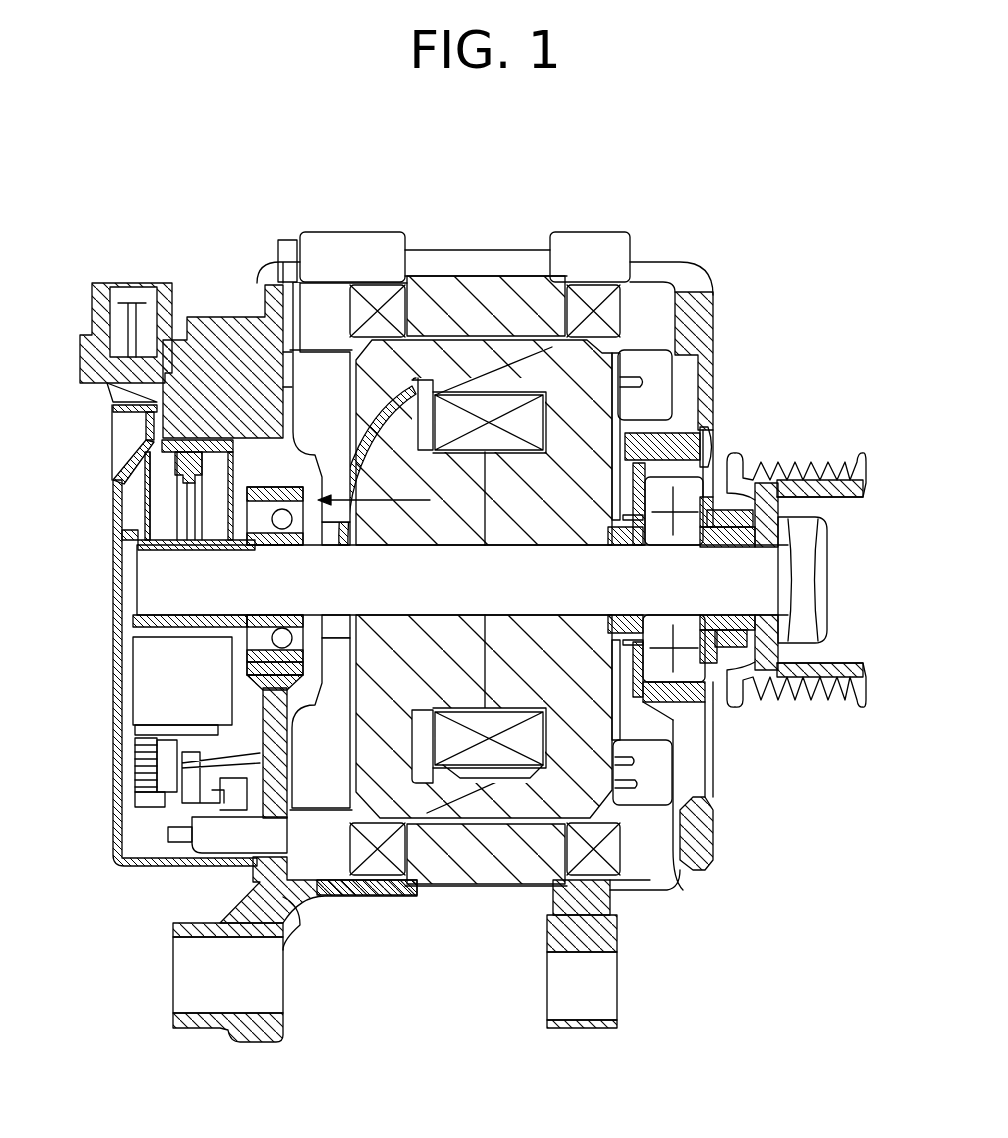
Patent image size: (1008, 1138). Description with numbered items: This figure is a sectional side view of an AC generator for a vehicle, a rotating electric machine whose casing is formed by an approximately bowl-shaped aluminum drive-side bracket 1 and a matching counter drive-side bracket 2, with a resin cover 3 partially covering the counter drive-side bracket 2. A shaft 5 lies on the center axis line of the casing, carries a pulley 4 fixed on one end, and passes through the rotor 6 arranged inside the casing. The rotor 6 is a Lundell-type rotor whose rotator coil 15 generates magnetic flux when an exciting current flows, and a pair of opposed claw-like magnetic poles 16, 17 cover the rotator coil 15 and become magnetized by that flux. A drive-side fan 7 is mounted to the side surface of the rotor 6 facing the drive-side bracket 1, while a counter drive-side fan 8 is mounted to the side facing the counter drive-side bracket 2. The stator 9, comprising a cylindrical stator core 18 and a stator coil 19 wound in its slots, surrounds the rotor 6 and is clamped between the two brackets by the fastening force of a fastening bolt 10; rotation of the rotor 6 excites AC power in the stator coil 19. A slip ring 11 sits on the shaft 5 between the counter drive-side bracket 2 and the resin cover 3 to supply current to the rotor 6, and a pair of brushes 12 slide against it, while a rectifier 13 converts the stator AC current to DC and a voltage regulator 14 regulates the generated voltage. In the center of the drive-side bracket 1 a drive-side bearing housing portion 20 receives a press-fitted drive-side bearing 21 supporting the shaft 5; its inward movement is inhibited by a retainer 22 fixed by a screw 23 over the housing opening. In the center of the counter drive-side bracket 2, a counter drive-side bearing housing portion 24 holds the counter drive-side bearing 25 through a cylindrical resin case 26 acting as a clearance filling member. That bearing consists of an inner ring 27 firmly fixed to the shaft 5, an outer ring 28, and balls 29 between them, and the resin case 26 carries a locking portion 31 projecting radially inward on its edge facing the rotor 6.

The drive-side bracket 1 is at (700, 315).
The counter drive-side bracket 2 is at (262, 702).
The resin cover 3 is at (115, 553).
The pulley 4 is at (840, 460).
The shaft 5 is at (577, 595).
The rotor 6 is at (525, 795).
The drive-side fan 7 is at (660, 365).
The counter drive-side fan 8 is at (333, 785).
The stator 9 is at (533, 290).
The fastening bolt 10 is at (493, 250).
The slip ring 11 is at (148, 557).
The pair of brushes 12 is at (165, 475).
The rectifier 13 is at (218, 838).
The voltage regulator 14 is at (242, 350).
The rotator coil 15 is at (485, 760).
The claw-like magnetic pole 16 is at (465, 365).
The claw-like magnetic pole 17 is at (585, 420).
The stator core 18 is at (565, 300).
The stator coil 19 is at (618, 315).
The drive-side bearing housing portion 20 is at (710, 697).
The drive-side bearing 21 is at (710, 660).
The retainer 22 is at (637, 697).
The screw 23 is at (712, 442).
The counter drive-side bearing housing portion 24 is at (245, 665).
The counter drive-side bearing 25 is at (263, 507).
The resin case 26 is at (287, 668).
The inner ring 27 is at (273, 615).
The outer ring 28 is at (302, 650).
The balls 29 is at (283, 545).
The locking portion 31 is at (255, 652).